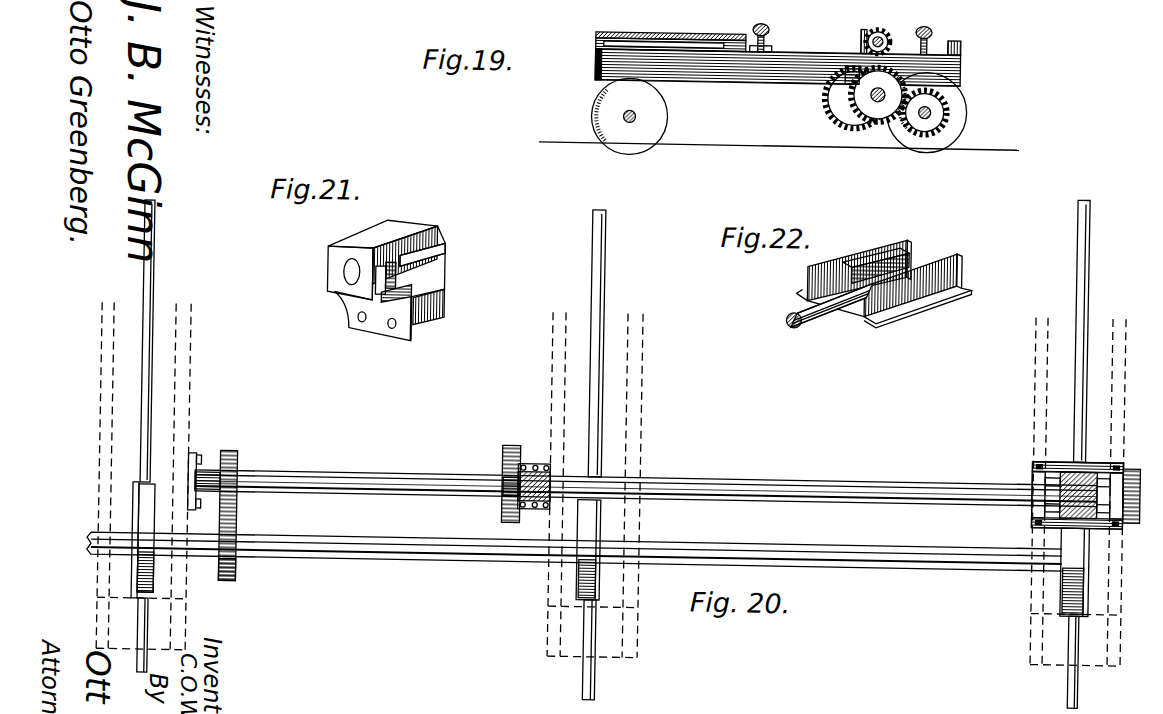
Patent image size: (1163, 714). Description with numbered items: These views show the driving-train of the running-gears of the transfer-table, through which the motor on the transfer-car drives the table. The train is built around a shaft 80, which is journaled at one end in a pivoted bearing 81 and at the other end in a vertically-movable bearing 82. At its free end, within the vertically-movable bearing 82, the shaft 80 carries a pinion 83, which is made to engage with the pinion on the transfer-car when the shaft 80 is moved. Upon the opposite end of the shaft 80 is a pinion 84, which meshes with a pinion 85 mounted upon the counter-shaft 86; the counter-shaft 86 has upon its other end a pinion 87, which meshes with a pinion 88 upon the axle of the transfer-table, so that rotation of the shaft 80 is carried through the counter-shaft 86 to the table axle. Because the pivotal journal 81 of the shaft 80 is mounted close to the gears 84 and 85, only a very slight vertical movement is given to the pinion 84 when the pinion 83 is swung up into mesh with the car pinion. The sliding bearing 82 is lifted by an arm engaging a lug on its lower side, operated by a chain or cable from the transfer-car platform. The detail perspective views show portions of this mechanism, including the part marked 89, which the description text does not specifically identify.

In FIG. 19, the shaft 80 is at (872, 34).
In FIG. 22, the shaft 80 is at (788, 325).
In FIG. 20, the shaft 80 is at (795, 477).
In FIG. 20, the pivoted bearing 81 is at (538, 484).
In FIG. 22, the vertically-movable bearing 82 is at (858, 258).
In FIG. 20, the vertically-movable bearing 82 is at (1063, 478).
In FIG. 20, the pinion 83 is at (1133, 462).
In FIG. 19, the pinion 84 is at (853, 39).
In FIG. 20, the pinion 84 is at (505, 480).
In FIG. 19, the pinion 85 is at (838, 85).
In FIG. 20, the pinion 85 is at (510, 447).
In FIG. 19, the counter-shaft 86 is at (864, 93).
In FIG. 19, the pinion 87 is at (846, 112).
In FIG. 20, the pinion 87 is at (239, 462).
In FIG. 19, the pinion 88 is at (946, 108).
In FIG. 20, the pinion 88 is at (238, 578).
In FIG. 21, the bracket block 89 is at (406, 229).